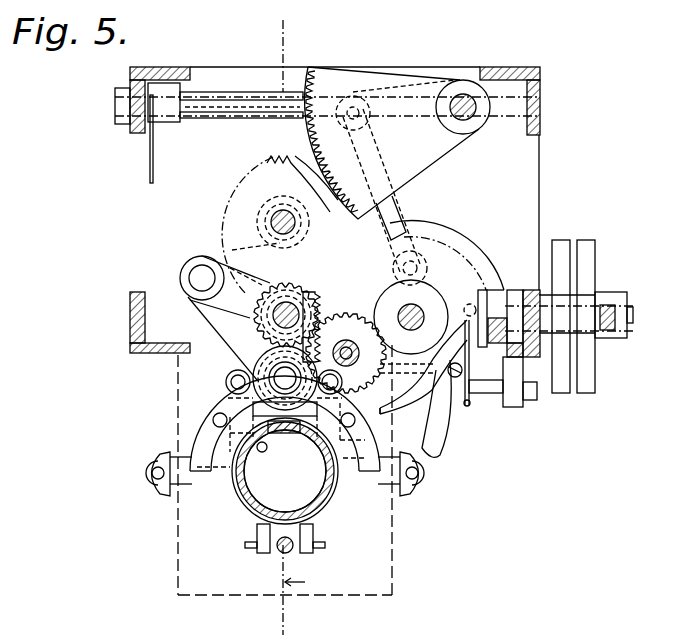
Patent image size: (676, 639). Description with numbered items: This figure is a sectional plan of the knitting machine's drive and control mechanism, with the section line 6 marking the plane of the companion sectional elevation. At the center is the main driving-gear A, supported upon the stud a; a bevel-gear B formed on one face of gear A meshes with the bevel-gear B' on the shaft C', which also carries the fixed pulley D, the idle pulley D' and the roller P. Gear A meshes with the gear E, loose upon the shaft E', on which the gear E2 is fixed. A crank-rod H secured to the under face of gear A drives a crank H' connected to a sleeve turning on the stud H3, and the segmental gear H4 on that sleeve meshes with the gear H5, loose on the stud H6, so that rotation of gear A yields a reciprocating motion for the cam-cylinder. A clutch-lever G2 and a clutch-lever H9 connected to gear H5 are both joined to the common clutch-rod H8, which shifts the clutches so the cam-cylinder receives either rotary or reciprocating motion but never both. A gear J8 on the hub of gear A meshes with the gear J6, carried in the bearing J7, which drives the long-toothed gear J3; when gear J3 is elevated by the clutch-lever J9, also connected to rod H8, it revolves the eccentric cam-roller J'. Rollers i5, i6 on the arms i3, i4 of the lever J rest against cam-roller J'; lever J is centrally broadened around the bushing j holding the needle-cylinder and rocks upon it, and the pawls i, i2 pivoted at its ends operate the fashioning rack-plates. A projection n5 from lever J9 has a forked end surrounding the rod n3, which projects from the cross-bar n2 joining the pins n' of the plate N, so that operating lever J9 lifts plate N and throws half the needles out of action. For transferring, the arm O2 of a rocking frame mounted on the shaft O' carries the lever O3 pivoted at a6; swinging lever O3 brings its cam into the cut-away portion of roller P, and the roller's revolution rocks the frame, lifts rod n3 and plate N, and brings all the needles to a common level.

The section line 6 is at (296, 328).
The segmental gear H4 is at (350, 75).
The stud H3 is at (462, 100).
The crank H' is at (395, 182).
The crank-rod H is at (401, 212).
The main driving-gear A is at (437, 272).
The bevel-gear B is at (454, 261).
The bevel-gear B' is at (502, 270).
The bearing block C' is at (522, 304).
The fixed pulley D is at (562, 294).
The idle pulley D' is at (592, 294).
The roller P is at (483, 347).
The pivot a6 is at (462, 371).
The arm O2 is at (406, 424).
The lever O3 is at (443, 427).
The shaft O' is at (513, 399).
The gear H5 is at (312, 141).
The stud H6 is at (290, 224).
The clutch-lever H9 is at (224, 246).
The clutch-rod H8 is at (192, 278).
The clutch-lever G2 is at (230, 287).
The clutch-lever J9 is at (222, 338).
The shaft E' is at (288, 292).
The gear E2 is at (301, 304).
The gear E is at (320, 325).
The gear J8 is at (411, 317).
The stud a is at (416, 312).
The gear J6 is at (346, 353).
The gear J3 is at (335, 349).
The bearing J7 is at (360, 350).
The eccentric cam-roller J' is at (277, 376).
The roller i5 is at (228, 383).
The roller i6 is at (342, 381).
The projection n5 is at (240, 402).
The pins n' is at (286, 415).
The arm i3 is at (225, 442).
The arm i4 is at (353, 430).
The rod n3 is at (265, 450).
The cross-bar n2 is at (296, 435).
The bushing j is at (285, 471).
The plate N is at (294, 485).
The lever J is at (285, 449).
The pawl i is at (150, 459).
The pawl i2 is at (152, 492).